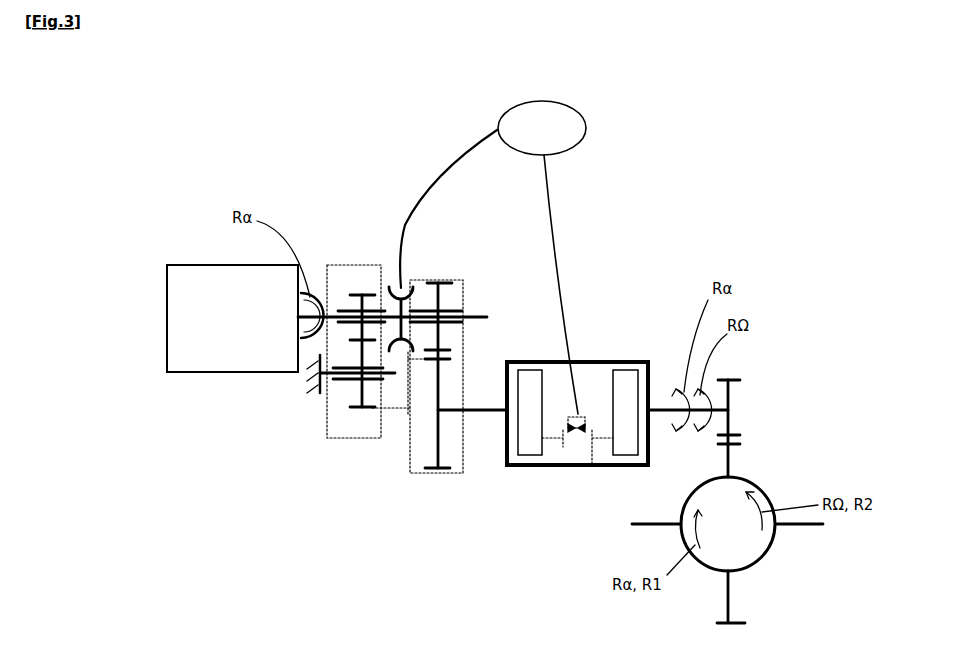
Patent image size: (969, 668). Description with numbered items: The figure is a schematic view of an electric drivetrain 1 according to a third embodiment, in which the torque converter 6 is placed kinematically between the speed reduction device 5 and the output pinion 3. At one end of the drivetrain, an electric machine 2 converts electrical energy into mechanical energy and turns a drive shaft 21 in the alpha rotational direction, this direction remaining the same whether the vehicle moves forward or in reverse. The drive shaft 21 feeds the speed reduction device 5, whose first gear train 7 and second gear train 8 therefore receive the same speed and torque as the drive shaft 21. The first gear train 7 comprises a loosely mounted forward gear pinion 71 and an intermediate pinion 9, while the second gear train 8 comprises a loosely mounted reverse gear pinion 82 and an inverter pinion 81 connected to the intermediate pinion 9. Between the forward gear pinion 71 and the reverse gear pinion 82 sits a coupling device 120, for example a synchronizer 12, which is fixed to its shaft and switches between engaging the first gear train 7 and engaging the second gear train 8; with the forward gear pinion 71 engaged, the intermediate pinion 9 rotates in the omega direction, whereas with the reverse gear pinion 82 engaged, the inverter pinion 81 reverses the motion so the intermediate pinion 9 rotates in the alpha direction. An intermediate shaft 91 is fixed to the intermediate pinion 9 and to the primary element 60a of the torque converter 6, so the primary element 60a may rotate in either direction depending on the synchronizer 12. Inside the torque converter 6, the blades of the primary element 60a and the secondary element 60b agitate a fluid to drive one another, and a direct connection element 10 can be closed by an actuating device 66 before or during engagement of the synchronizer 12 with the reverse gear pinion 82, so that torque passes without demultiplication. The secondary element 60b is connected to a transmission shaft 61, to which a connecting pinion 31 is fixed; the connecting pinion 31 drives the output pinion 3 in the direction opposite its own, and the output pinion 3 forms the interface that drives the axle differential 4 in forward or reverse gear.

The electric drivetrain 1 is at (107, 237).
The electric machine 2 is at (182, 328).
The drive shaft 21 is at (323, 310).
The speed reduction device 5 is at (358, 452).
The second gear train 8 is at (365, 267).
The inverter pinion 81 is at (355, 378).
The reverse gear pinion 82 is at (320, 353).
The coupling device 120 is at (397, 279).
The synchronizer 12 is at (391, 290).
The actuating device 66 is at (587, 133).
The first gear train 7 is at (458, 360).
The forward gear pinion 71 is at (438, 285).
The intermediate pinion 9 is at (435, 442).
The intermediate shaft 91 is at (466, 412).
The direct connection element 10 is at (581, 393).
The primary element 60a is at (525, 377).
The secondary element 60b is at (627, 377).
The torque converter 6 is at (578, 414).
The transmission shaft 61 is at (663, 405).
The connecting pinion 31 is at (730, 398).
The output pinion 3 is at (730, 458).
The axle differential 4 is at (717, 543).